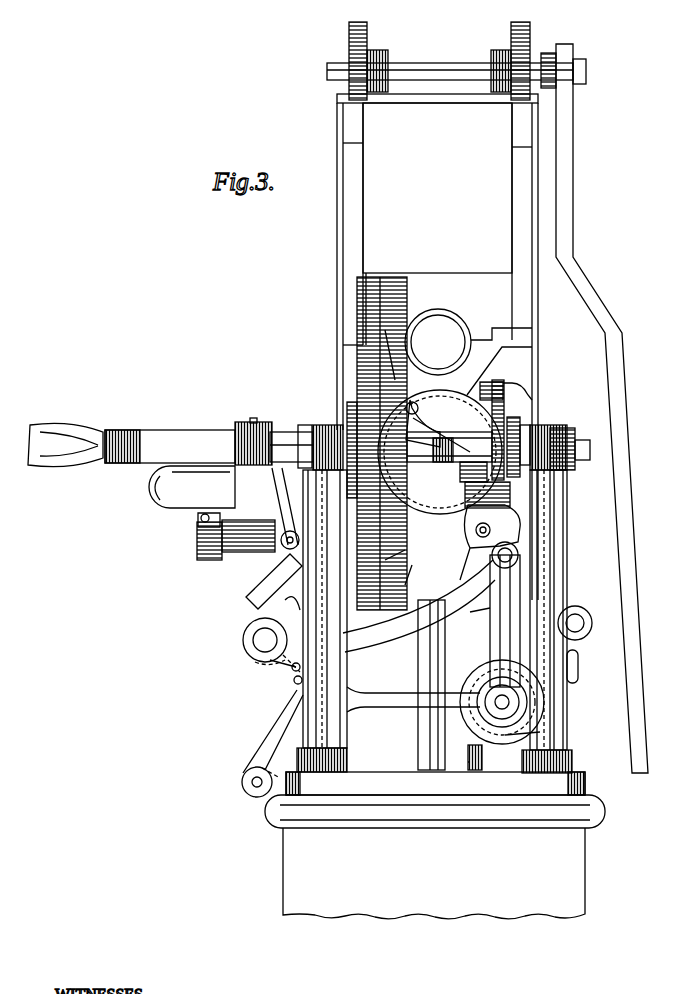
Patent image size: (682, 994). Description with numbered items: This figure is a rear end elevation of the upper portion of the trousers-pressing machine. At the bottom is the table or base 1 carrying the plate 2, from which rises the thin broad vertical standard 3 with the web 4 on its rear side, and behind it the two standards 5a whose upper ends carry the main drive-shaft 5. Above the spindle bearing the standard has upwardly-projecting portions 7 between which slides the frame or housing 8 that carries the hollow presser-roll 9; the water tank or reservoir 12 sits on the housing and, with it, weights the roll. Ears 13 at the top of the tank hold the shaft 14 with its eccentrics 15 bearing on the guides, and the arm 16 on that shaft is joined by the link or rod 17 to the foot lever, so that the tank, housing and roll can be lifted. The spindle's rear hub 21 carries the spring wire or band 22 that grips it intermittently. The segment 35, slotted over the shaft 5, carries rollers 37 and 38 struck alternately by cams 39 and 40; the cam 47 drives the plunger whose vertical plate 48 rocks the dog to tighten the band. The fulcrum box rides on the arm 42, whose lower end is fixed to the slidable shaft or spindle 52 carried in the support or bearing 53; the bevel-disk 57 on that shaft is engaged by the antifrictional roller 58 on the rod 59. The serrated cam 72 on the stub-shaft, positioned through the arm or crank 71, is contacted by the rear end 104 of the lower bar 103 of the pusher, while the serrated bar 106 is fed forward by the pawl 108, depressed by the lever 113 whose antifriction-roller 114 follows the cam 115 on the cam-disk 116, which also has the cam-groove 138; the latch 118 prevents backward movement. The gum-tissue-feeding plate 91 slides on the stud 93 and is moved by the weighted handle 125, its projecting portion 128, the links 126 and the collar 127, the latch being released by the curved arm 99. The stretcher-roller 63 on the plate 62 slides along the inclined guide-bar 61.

The shaft 14 is at (436, 70).
The eccentrics 15 is at (540, 45).
The ears 13 is at (500, 62).
The arm 16 is at (586, 72).
The link or rod 17 is at (604, 300).
The upwardly-projecting portions 7 is at (562, 212).
The water tank or reservoir 12 is at (437, 188).
The frame or housing 8 is at (431, 309).
The hollow presser-roll 9 is at (434, 322).
The cam-groove 138 is at (362, 322).
The cam-disk 116 is at (398, 363).
The latch 118 is at (413, 547).
The serrated bar 106 is at (423, 569).
The cam 115 is at (390, 430).
The spring wire or band 22 is at (467, 398).
The cam 39 is at (480, 435).
The main drive-shaft 5 is at (298, 432).
The antifriction-roller 114 is at (418, 408).
The hub 21 is at (429, 423).
The cam 40 is at (458, 470).
The roller 38 is at (466, 494).
The lever 113 is at (476, 528).
The pawl 108 is at (466, 540).
The lower bar 103 is at (368, 640).
The rear end 104 is at (481, 612).
The arm 42 is at (505, 620).
The shaft or spindle 52 is at (510, 702).
The support or bearing 53 is at (485, 685).
The bevel-disk 57 is at (545, 732).
The antifrictional roller 58 is at (470, 745).
The rod 59 is at (480, 762).
The standards 5a is at (548, 563).
The segment 35 is at (520, 398).
The cam 47 is at (535, 420).
The roller 37 is at (497, 382).
The vertical plate 48 is at (515, 388).
The vertical standard 3 is at (413, 709).
The web 4 is at (418, 665).
The serrated cam 72 is at (585, 635).
The arm or crank 71 is at (578, 667).
The plate 2 is at (435, 783).
The table or base 1 is at (420, 873).
The weighted handle 125 is at (192, 487).
The links 126 is at (200, 520).
The collar 127 is at (197, 548).
The stud 93 is at (248, 536).
The curved arm 99 is at (290, 500).
The projecting portion 128 is at (274, 528).
The plate 91 is at (274, 582).
The stretcher-roller 63 is at (250, 632).
The plate 62 is at (290, 672).
The inclined guide-bar 61 is at (290, 735).